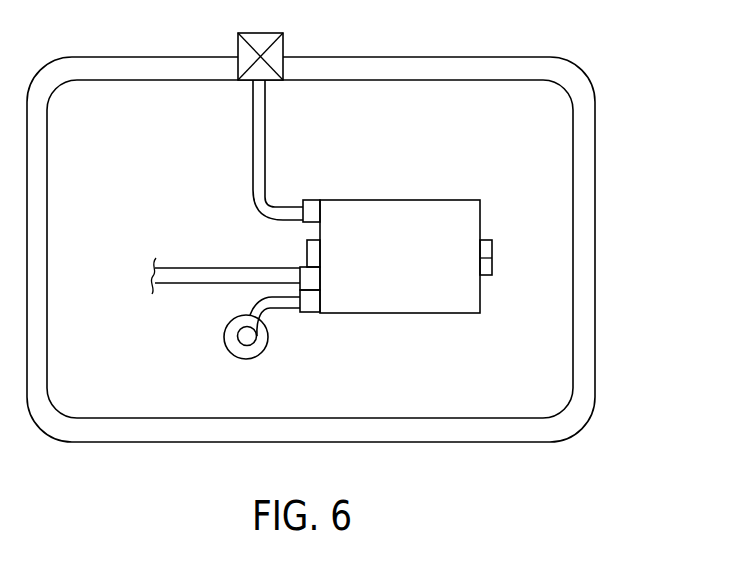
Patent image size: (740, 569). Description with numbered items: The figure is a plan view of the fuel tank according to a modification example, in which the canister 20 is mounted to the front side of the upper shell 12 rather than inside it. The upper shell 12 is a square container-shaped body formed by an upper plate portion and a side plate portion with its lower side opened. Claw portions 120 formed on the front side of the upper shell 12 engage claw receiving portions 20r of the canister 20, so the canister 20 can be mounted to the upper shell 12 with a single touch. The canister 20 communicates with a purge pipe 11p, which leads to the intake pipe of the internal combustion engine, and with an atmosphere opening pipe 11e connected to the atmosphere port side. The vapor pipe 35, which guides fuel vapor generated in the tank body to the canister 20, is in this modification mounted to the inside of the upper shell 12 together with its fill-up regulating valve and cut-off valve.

The upper shell 12 is at (523, 250).
The canister 20 is at (380, 200).
The claw receiving portion 20r is at (314, 243).
The claw portion 120 is at (305, 259).
The atmosphere opening pipe 11e is at (267, 128).
The purge pipe 11p is at (193, 284).
The vapor pipe 35 is at (285, 309).